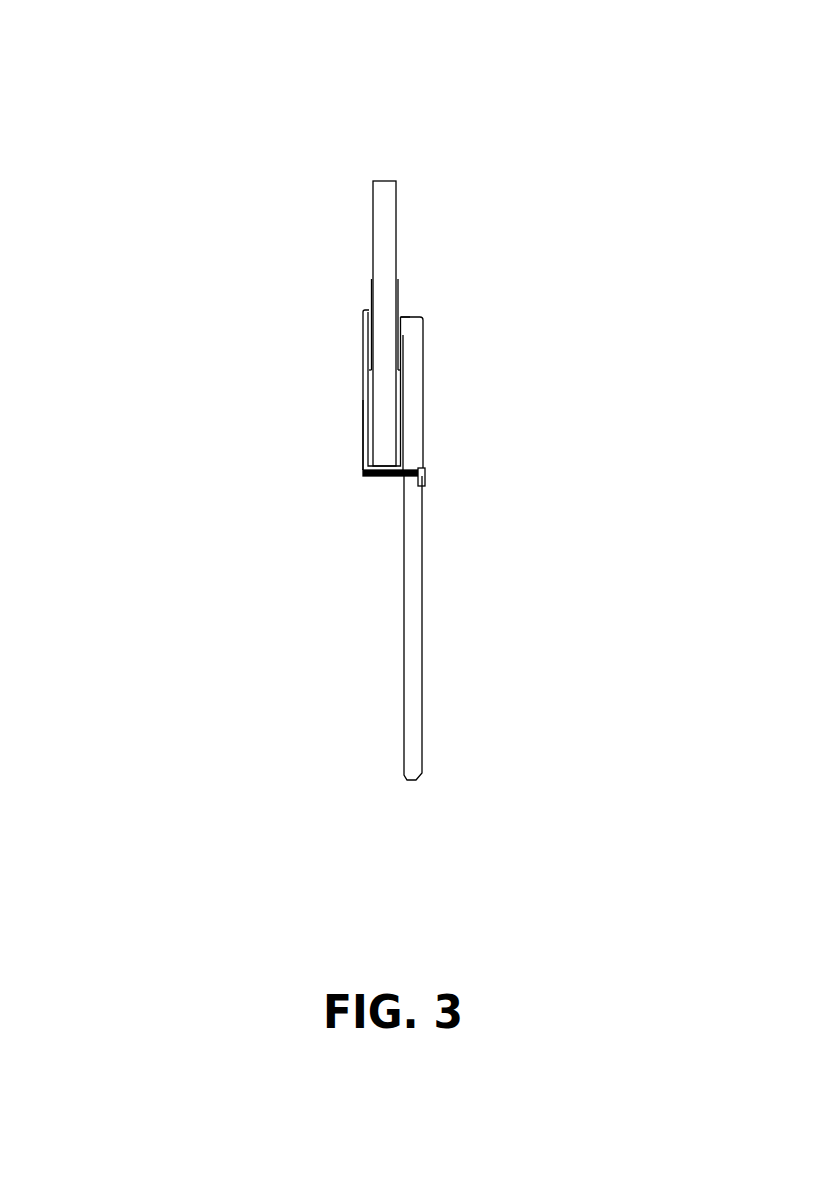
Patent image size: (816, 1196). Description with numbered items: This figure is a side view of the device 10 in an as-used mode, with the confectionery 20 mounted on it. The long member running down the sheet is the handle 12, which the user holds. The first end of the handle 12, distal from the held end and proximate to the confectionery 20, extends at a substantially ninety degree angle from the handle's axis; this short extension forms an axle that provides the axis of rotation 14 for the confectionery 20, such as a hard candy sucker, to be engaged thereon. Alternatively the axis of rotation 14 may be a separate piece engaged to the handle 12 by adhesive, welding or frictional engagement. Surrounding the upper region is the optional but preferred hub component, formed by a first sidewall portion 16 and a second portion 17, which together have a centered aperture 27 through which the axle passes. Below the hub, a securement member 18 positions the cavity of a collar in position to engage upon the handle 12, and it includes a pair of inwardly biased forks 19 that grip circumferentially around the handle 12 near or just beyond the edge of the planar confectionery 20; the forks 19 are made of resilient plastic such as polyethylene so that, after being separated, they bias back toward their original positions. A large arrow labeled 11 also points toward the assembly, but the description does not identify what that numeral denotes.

The device 10 is at (134, 78).
The plate assembly 11 is at (553, 422).
The handle 12 is at (418, 647).
The axis of rotation 14 is at (403, 335).
The first sidewall portion 16 is at (400, 293).
The second portion 17 is at (370, 302).
The securement member 18 is at (363, 425).
The inwardly biased forks 19 is at (425, 477).
The confectionery 20 is at (392, 185).
The centered aperture 27 is at (495, 286).